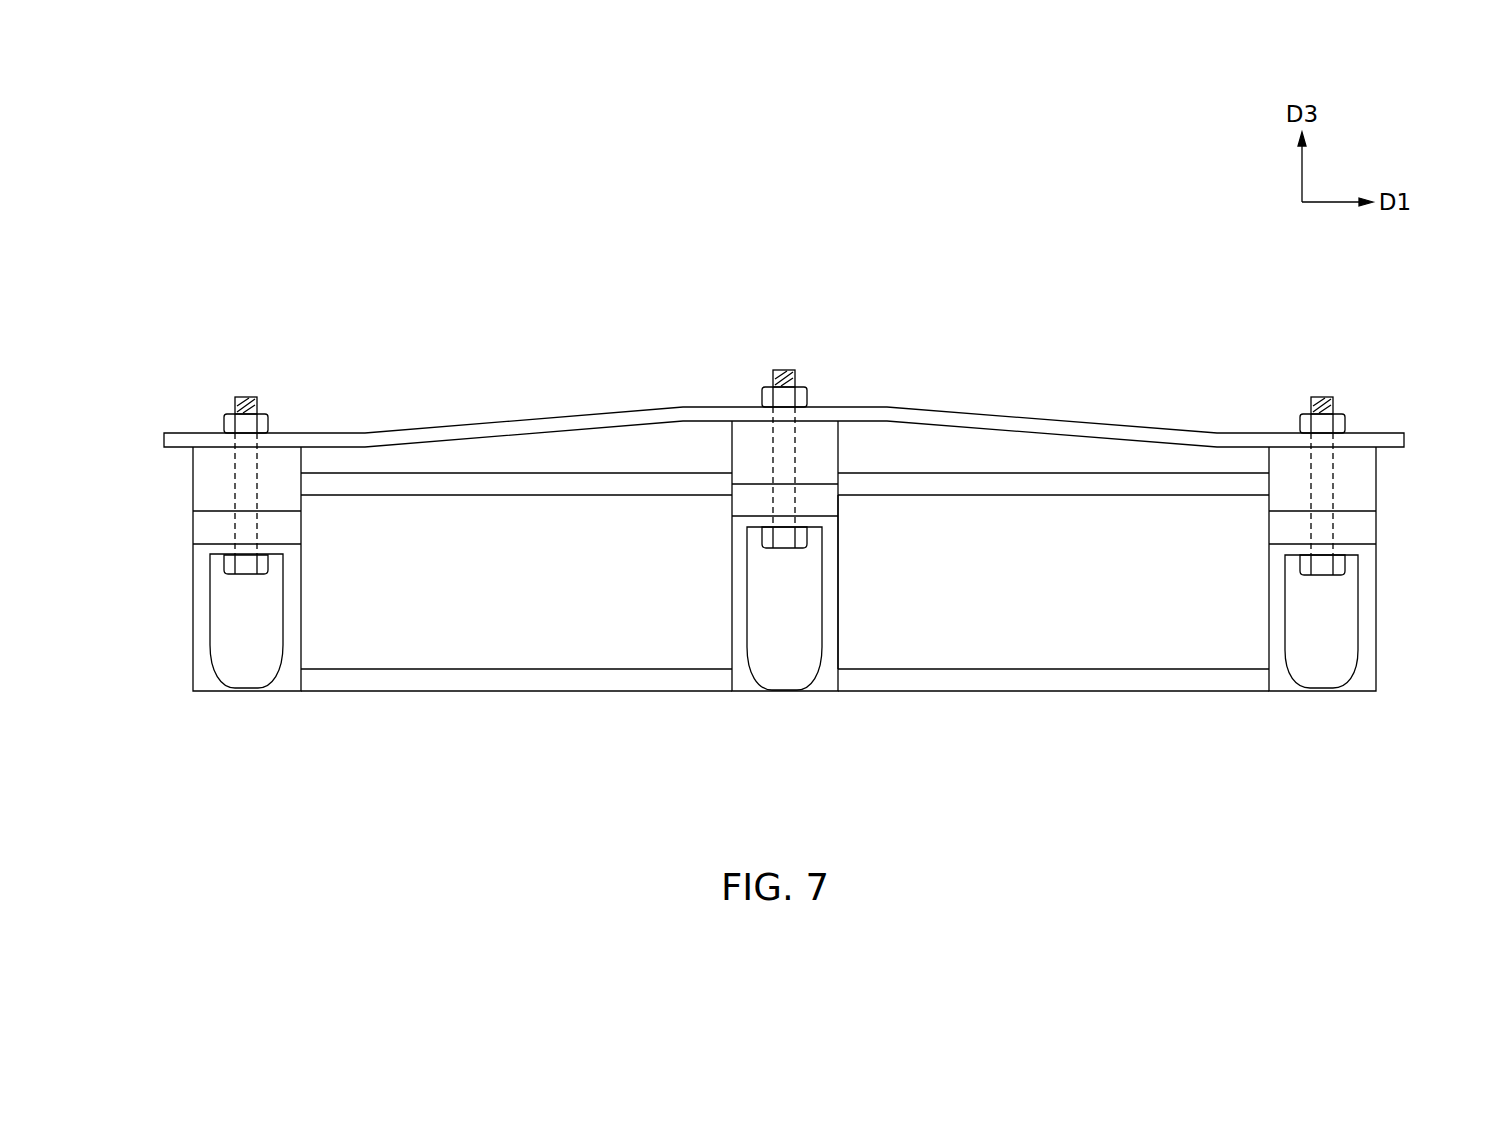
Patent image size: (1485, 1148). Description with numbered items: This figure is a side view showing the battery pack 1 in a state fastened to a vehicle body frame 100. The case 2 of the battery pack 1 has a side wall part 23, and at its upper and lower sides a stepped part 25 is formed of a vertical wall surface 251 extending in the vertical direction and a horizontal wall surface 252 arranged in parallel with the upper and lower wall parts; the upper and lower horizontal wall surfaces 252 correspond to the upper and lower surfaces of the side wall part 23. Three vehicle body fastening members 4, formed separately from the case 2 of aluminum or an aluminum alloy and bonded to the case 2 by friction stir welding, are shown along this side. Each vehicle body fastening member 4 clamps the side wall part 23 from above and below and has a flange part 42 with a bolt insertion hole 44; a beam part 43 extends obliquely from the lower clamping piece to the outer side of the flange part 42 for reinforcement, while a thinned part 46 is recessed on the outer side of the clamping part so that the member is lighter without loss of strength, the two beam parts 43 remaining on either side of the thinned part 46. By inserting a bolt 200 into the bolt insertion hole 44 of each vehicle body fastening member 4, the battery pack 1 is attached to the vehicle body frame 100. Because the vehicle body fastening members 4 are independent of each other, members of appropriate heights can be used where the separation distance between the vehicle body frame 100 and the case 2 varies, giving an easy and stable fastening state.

The battery pack 1 is at (886, 765).
The case 2 is at (1016, 715).
The vehicle body fastening member 4 is at (150, 545).
The side wall part 23 is at (1177, 643).
The stepped part 25 is at (785, 576).
The flange part 42 is at (302, 462).
The beam part 43 is at (293, 607).
The bolt insertion hole 44 is at (233, 487).
The thinned part 46 is at (230, 653).
The vehicle body frame 100 is at (982, 410).
The bolt 200 is at (248, 397).
The vertical wall surface 251 is at (1038, 483).
The horizontal wall surface 252 is at (1070, 495).